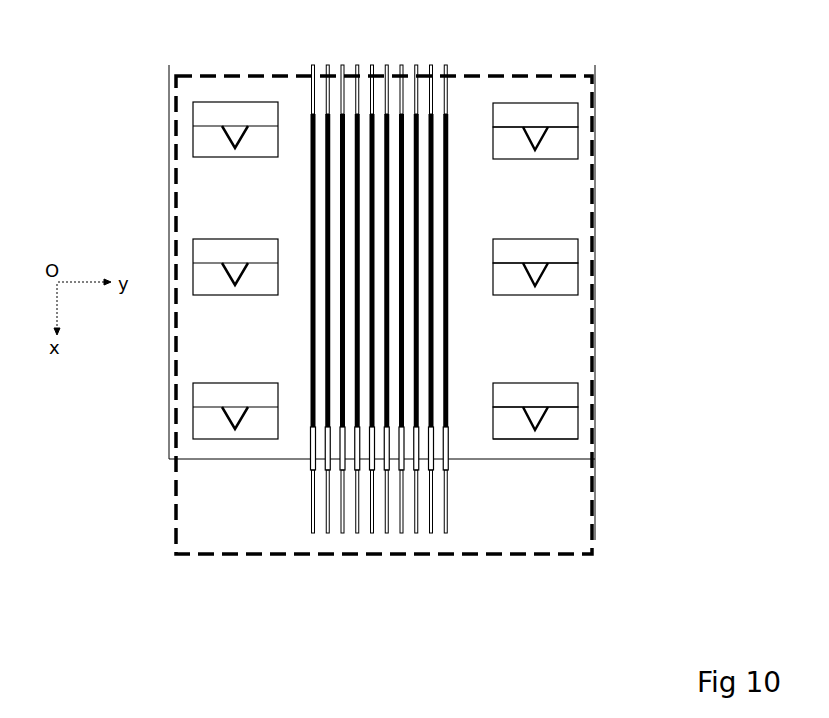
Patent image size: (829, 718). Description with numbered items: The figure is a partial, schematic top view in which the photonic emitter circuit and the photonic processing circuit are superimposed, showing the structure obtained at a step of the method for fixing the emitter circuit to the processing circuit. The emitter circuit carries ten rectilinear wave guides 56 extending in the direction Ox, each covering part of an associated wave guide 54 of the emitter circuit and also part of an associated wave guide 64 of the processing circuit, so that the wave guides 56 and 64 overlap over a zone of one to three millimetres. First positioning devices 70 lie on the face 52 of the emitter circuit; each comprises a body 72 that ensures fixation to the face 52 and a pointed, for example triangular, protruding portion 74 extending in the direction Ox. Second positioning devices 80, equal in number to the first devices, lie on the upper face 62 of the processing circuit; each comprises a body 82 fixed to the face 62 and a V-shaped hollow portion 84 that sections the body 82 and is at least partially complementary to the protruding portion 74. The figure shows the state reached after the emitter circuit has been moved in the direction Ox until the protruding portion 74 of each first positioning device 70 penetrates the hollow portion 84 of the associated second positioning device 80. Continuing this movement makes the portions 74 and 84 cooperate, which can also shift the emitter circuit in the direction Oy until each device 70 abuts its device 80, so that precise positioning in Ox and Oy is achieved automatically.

The face 52 is at (516, 530).
The wave guide 54 is at (455, 555).
The wave guide 56 is at (311, 125).
The upper face 62 is at (486, 122).
The wave guide 64 is at (432, 96).
The first positioning device 70 is at (566, 113).
The body 72 is at (538, 392).
The protruding portion 74 is at (540, 410).
The second positioning device 80 is at (565, 148).
The body 82 is at (565, 425).
The hollow portion 84 is at (525, 440).